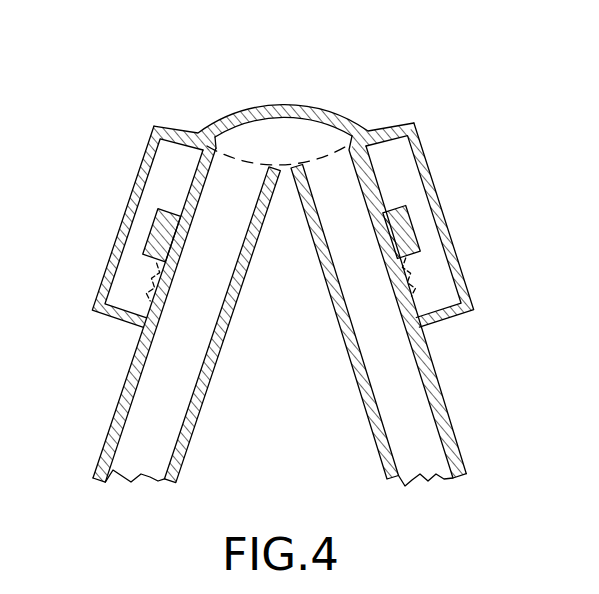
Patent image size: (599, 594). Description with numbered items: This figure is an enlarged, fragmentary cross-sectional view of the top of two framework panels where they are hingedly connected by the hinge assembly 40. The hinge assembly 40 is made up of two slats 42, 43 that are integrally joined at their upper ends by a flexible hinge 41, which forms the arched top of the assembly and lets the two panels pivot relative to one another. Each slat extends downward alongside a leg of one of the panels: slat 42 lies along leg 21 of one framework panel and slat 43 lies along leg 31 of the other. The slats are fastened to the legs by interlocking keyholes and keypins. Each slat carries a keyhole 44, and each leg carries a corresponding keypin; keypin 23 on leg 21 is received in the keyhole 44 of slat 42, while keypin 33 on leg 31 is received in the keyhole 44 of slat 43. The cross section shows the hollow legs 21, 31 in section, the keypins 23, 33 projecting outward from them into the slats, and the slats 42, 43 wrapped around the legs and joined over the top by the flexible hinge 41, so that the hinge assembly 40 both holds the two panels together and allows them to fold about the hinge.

The hinge assembly 40 is at (318, 80).
The flexible hinge 41 is at (272, 108).
The slat 42 is at (137, 173).
The slat 43 is at (436, 187).
The keypin 23 is at (150, 220).
The keypin 33 is at (415, 227).
The keyhole 44 is at (151, 272).
The leg 21 is at (130, 363).
The leg 31 is at (437, 368).